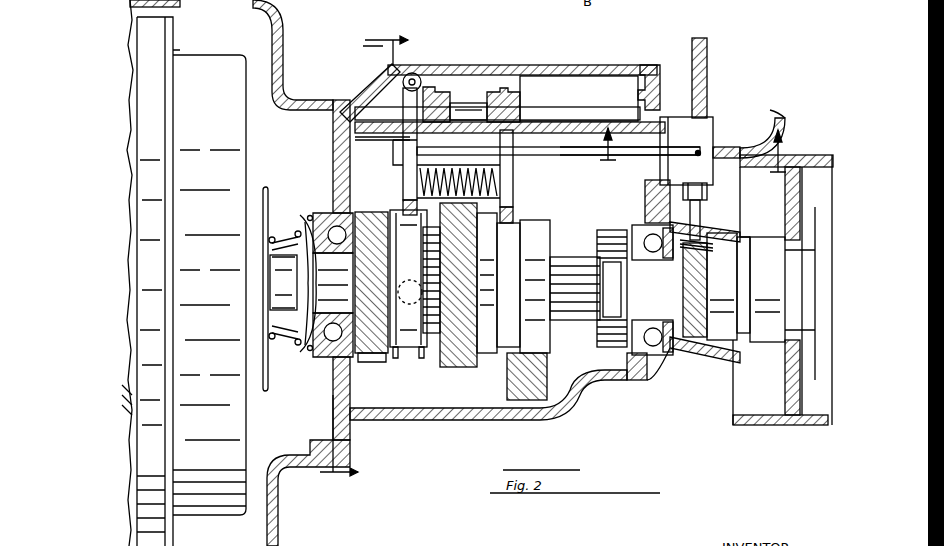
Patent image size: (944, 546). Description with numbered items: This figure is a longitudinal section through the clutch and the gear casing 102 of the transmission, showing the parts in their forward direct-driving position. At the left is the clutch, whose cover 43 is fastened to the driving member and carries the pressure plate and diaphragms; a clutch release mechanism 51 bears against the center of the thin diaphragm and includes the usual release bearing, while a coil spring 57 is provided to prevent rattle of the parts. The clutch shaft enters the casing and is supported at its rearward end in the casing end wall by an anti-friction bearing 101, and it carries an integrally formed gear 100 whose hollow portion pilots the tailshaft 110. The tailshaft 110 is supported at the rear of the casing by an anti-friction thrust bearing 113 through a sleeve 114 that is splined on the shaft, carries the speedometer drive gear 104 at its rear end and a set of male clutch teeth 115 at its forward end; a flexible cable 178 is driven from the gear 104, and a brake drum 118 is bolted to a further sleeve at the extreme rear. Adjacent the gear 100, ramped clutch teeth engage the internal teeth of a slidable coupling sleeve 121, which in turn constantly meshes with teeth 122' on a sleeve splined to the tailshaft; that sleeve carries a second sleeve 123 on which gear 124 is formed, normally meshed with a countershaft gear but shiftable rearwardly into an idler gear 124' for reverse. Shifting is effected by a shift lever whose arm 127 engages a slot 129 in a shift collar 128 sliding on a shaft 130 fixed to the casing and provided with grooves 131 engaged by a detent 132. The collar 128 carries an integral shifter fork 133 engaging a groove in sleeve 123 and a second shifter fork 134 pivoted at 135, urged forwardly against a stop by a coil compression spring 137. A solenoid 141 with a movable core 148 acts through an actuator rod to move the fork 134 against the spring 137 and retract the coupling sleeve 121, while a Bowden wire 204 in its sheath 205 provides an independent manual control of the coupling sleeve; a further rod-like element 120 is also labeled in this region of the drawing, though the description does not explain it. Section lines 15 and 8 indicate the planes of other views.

The cover 43 is at (222, 68).
The gear casing 102 is at (378, 68).
The clutch release mechanism 51 is at (272, 185).
The anti-friction bearing 101 is at (312, 228).
The coil spring 57 is at (288, 362).
The section line 15- 15 is at (364, 259).
The detent 132 is at (440, 85).
The solenoid core 148 is at (663, 74).
The pivot 135 is at (402, 78).
The second shifter fork 134 is at (410, 186).
The grooves 131 is at (522, 122).
The shift collar 128 is at (468, 103).
The arm 127 is at (505, 90).
The slot 129 is at (522, 100).
The shaft 130 is at (618, 114).
The control rod 120 is at (580, 160).
The section line 8- 8 is at (682, 150).
The coil compression spring 137 is at (493, 172).
The shifter fork 133 is at (513, 182).
The flexible cable 178 is at (708, 50).
The solenoid 141 is at (700, 125).
The sheath 205 is at (770, 114).
The Bowden wire 204 is at (776, 108).
The anti-friction thrust bearing 113 is at (670, 196).
The gear 100 is at (370, 353).
The coupling sleeve 121 is at (395, 360).
The teeth 122' is at (432, 313).
The gear 124 is at (495, 293).
The idler gear 124' is at (547, 376).
The tailshaft 110 is at (592, 266).
The male clutch teeth 115 is at (608, 245).
The second sleeve 123 is at (610, 226).
The speedometer drive gear 104 is at (672, 362).
The sleeve 114 is at (720, 262).
The brake drum 118 is at (762, 426).